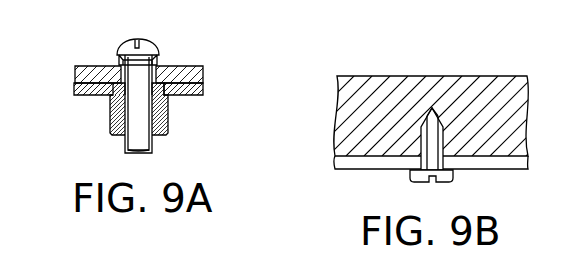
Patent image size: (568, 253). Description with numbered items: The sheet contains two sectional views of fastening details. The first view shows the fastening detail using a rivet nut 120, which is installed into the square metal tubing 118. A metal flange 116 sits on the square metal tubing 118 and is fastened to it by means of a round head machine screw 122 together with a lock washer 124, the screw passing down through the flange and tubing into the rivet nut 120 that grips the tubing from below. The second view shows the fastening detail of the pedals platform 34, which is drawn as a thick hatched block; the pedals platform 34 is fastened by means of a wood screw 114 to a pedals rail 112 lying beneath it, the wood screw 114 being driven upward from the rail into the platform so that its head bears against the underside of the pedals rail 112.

In FIG. 9B, the pedals platform 34 is at (372, 76).
In FIG. 9B, the pedals rail 112 is at (335, 169).
In FIG. 9B, the wood screw 114 is at (453, 180).
In FIG. 9A, the metal flange 116 is at (90, 66).
In FIG. 9A, the square metal tubing 118 is at (190, 95).
In FIG. 9A, the rivet nut 120 is at (110, 123).
In FIG. 9A, the round head machine screw 122 is at (145, 40).
In FIG. 9A, the lock washer 124 is at (151, 65).